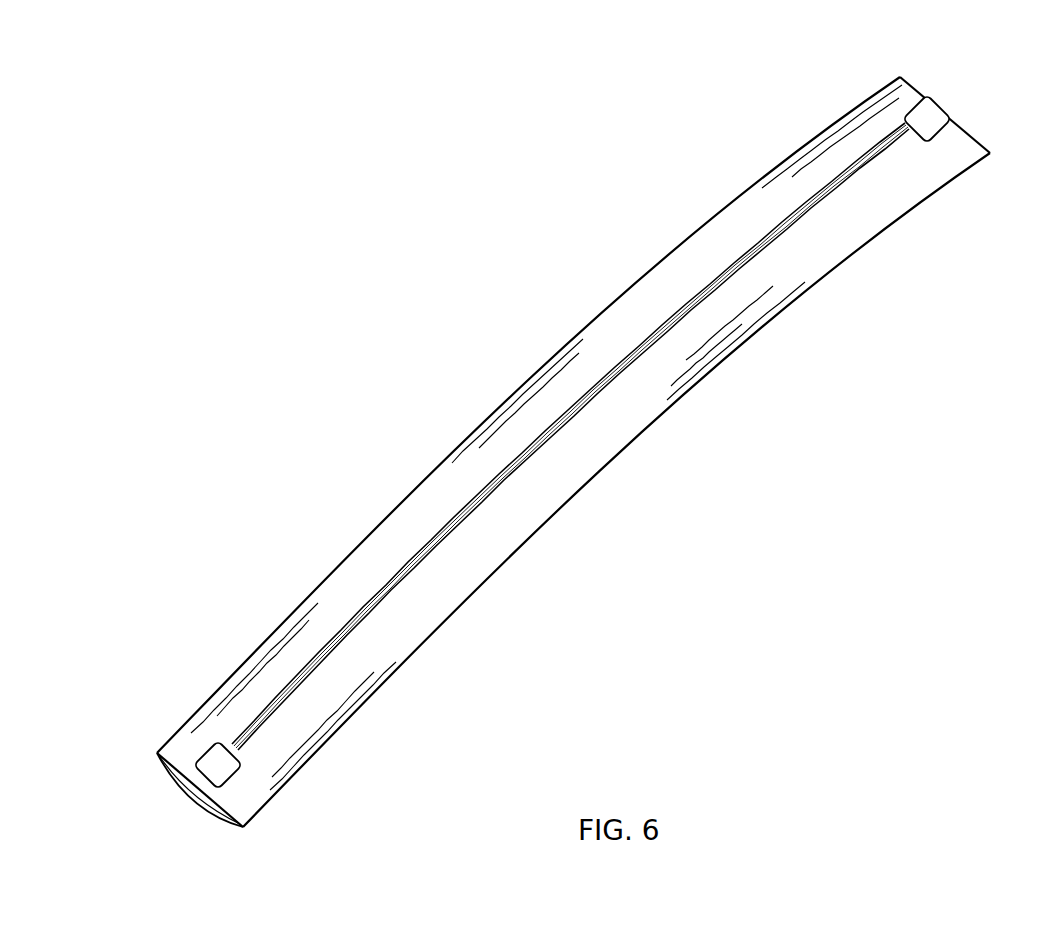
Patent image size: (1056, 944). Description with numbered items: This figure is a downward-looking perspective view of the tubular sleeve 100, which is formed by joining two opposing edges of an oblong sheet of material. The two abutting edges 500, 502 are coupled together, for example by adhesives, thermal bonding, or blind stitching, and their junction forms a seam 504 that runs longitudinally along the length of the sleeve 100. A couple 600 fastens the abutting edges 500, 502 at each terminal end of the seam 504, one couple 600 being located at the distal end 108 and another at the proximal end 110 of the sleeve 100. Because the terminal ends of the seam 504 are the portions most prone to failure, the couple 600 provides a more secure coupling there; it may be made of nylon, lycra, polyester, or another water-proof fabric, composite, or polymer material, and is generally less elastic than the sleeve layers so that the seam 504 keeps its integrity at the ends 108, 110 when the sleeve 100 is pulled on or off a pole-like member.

The sleeve 100 is at (867, 220).
The distal end 108 is at (893, 73).
The proximal end 110 is at (152, 751).
The abutting edge 500 is at (527, 436).
The abutting edge 502 is at (432, 543).
The seam 504 is at (268, 706).
The couple 600 is at (928, 112).